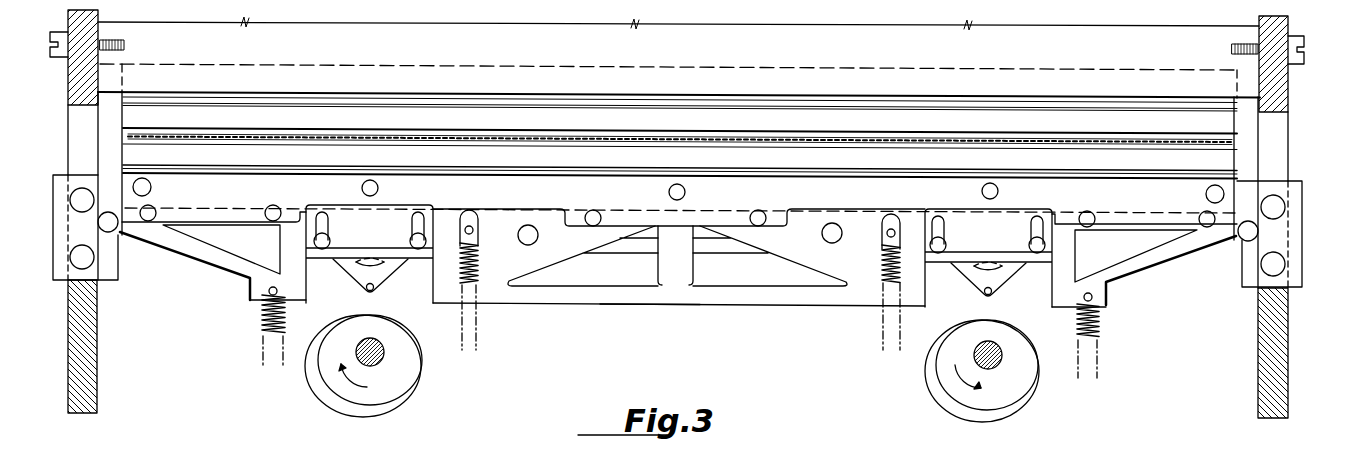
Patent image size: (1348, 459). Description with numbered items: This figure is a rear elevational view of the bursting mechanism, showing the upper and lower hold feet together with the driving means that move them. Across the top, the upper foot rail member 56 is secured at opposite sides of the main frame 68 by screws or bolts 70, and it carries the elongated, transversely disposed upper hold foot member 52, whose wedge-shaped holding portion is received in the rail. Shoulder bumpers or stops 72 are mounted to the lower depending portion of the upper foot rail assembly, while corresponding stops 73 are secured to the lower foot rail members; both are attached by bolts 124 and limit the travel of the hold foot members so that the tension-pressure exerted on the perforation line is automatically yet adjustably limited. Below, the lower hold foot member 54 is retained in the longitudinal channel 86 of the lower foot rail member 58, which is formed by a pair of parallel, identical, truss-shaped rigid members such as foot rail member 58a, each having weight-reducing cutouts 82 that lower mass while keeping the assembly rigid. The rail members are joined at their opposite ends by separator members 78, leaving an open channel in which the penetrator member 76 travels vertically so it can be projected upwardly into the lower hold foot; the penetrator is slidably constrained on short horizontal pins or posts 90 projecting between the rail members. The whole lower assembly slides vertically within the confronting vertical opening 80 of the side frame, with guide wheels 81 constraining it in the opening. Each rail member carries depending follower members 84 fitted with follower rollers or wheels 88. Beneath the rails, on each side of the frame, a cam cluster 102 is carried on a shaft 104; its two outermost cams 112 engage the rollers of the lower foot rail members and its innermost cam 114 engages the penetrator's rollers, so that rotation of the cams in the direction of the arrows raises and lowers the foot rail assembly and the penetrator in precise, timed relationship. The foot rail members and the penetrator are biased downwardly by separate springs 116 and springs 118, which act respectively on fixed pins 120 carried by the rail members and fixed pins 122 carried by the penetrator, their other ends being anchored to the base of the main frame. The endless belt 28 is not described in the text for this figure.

The endless belt 28 is at (123, 135).
The upper hold foot member 52 is at (303, 110).
The lower hold foot member 54 is at (1228, 165).
The upper foot rail member 56 is at (550, 59).
The lower foot rail member 58 is at (597, 306).
The foot rail member 58a is at (650, 305).
The main frame 68 is at (68, 70).
The screws or bolts 70 is at (50, 32).
The shoulder bumpers or stops 72 is at (735, 104).
The stops 73 is at (1180, 224).
The penetrator member 76 is at (727, 250).
The separator members 78 is at (72, 252).
The vertical opening 80 is at (73, 115).
The guide wheels 81 is at (115, 235).
The weight-reducing cutouts 82 is at (210, 245).
The follower members 84 is at (394, 218).
The longitudinal channel 86 is at (306, 300).
The follower rollers or wheels 88 is at (395, 310).
The pins or posts 90 is at (521, 243).
The cam clusters 102 is at (326, 410).
The shafts 104 is at (385, 358).
The cams 112 is at (408, 378).
The cam 114 is at (310, 371).
The springs 116 is at (265, 322).
The springs 118 is at (478, 330).
The fixed pins 120 is at (268, 292).
The fixed pins 122 is at (468, 226).
The bolts 124 is at (152, 187).